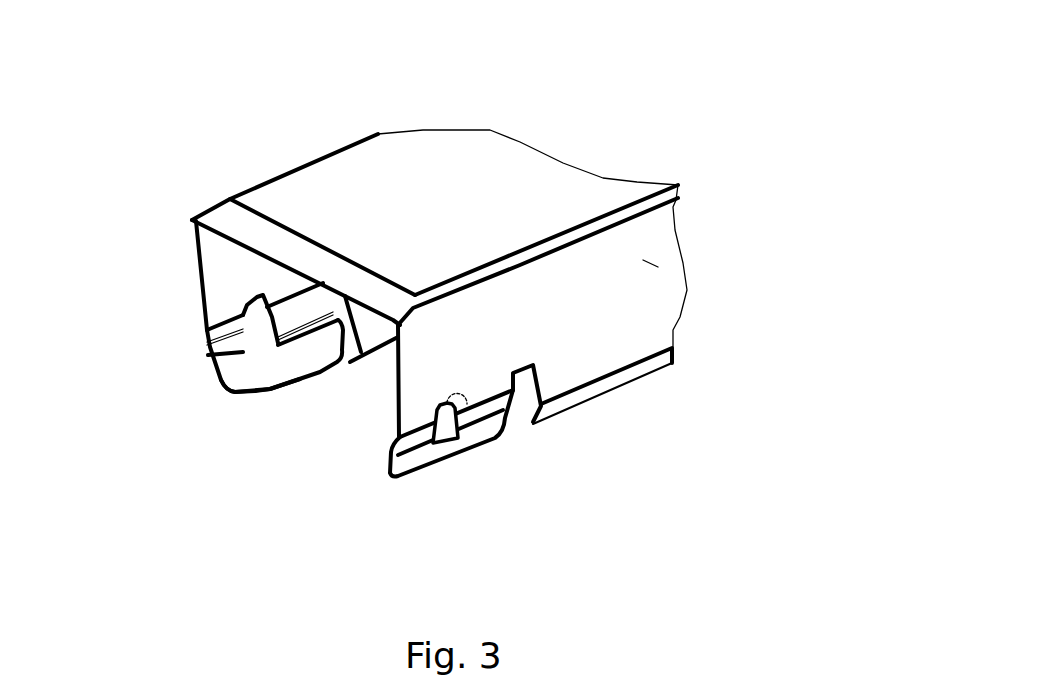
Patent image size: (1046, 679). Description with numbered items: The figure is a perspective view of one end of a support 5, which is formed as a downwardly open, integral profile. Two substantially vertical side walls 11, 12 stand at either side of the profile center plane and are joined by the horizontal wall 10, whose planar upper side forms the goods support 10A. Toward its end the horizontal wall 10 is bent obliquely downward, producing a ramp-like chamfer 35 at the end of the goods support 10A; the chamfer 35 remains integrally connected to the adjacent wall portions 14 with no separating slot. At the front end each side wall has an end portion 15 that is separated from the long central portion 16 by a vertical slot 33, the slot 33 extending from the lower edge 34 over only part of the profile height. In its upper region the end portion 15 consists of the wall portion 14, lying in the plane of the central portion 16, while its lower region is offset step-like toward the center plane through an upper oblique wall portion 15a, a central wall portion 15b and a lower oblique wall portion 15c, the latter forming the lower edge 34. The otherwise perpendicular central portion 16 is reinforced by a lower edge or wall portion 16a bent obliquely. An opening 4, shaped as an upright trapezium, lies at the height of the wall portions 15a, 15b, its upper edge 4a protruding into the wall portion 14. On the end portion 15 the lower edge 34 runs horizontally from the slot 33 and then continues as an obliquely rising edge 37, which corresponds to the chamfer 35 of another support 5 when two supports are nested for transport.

The support 5 is at (553, 92).
The horizontal wall 10 is at (565, 182).
The goods support 10A is at (680, 267).
The side wall 11 is at (643, 260).
The side wall 12 is at (320, 157).
The wall portion 14 is at (240, 290).
The end portion 15 is at (506, 347).
The upper oblique wall portion 15a is at (203, 337).
The central wall portion 15b is at (218, 375).
The lower oblique wall portion 15c is at (257, 377).
The central portion 16 is at (617, 300).
The lower edge or wall portion 16a is at (632, 380).
The opening 4 is at (440, 436).
The upper edge 4a is at (463, 412).
The vertical slot 33 is at (525, 415).
The lower edge 34 is at (303, 380).
The ramp-like chamfer 35 is at (282, 242).
The obliquely rising edge 37 is at (393, 476).